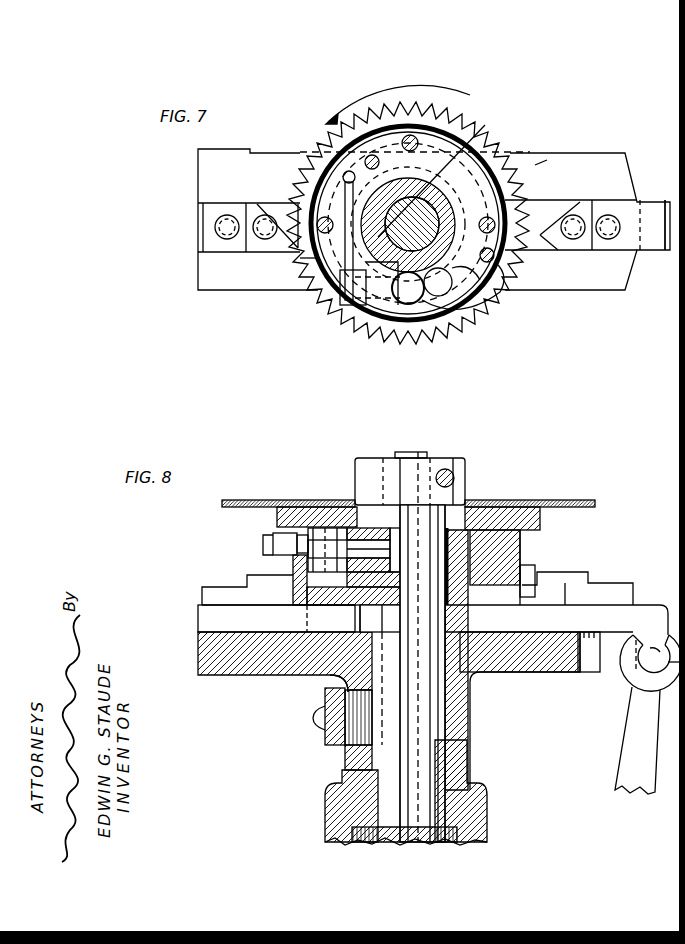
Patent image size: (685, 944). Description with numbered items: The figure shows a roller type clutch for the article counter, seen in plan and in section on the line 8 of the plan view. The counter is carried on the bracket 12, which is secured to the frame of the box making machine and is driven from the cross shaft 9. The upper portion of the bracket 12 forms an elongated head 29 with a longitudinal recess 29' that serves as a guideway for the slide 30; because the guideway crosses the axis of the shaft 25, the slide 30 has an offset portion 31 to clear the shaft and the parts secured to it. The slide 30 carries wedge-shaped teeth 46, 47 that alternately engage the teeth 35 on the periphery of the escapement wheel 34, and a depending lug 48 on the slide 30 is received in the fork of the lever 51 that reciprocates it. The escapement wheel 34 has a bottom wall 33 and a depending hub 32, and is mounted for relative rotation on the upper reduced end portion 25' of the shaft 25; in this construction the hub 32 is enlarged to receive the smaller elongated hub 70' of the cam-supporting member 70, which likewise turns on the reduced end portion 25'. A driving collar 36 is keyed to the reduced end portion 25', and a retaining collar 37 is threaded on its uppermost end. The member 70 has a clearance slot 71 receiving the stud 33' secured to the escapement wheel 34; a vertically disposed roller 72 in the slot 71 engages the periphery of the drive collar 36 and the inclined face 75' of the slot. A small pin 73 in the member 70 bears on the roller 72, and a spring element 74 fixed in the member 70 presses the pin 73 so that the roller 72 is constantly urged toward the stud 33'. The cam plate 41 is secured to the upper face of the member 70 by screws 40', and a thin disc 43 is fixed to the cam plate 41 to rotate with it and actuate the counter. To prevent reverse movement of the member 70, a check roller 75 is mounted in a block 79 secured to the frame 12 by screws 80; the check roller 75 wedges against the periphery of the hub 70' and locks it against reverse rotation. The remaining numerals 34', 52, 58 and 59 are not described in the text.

In FIG. 7, the section line 8— 8 is at (198, 252).
In FIG. 8, the cross shaft 9 is at (380, 718).
In FIG. 8, the bracket 12 is at (485, 805).
In FIG. 7, the shaft 25 is at (422, 224).
In FIG. 8, the shaft 25 is at (436, 632).
In FIG. 8, the upper reduced end portion of the shaft 25' is at (384, 766).
In FIG. 7, the head 29 is at (434, 207).
In FIG. 8, the head 29 is at (364, 662).
In FIG. 7, the recess or guideway 29' is at (418, 187).
In FIG. 7, the slide 30 is at (555, 205).
In FIG. 8, the slide 30 is at (200, 620).
In FIG. 7, the offset portion of the slide 31 is at (373, 143).
In FIG. 8, the offset portion of the slide 31 is at (468, 627).
In FIG. 8, the depending hub 32 is at (335, 675).
In FIG. 8, the bottom wall 33 is at (404, 539).
In FIG. 7, the stud 33' is at (490, 302).
In FIG. 7, the escapement wheel 34 is at (408, 208).
In FIG. 8, the escapement wheel 34 is at (571, 567).
In FIG. 7, the stop 34' is at (269, 269).
In FIG. 8, the stop 34' is at (223, 543).
In FIG. 7, the teeth 35 is at (390, 121).
In FIG. 8, the teeth 35 is at (545, 590).
In FIG. 7, the driving collar 36 is at (455, 155).
In FIG. 8, the retaining collar 37 is at (357, 468).
In FIG. 7, the screws 40' is at (465, 161).
In FIG. 7, the cam plate 41 is at (668, 200).
In FIG. 8, the cam plate 41 is at (520, 506).
In FIG. 8, the thin disc 43 is at (225, 506).
In FIG. 7, the wedge-shaped tooth 46 is at (282, 216).
In FIG. 8, the wedge-shaped tooth 46 is at (278, 615).
In FIG. 7, the wedge-shaped tooth 47 is at (552, 238).
In FIG. 8, the wedge-shaped tooth 47 is at (555, 595).
In FIG. 8, the depending lug 48 is at (655, 640).
In FIG. 8, the lever 51 is at (622, 770).
In FIG. 8, the wrench jaw 52 is at (655, 690).
In FIG. 8, the lever 58 is at (674, 466).
In FIG. 8, the lever 59 is at (676, 436).
In FIG. 7, the cam-supporting member 70 is at (492, 296).
In FIG. 8, the cam-supporting member 70 is at (524, 563).
In FIG. 8, the elongated hub 70' is at (512, 660).
In FIG. 7, the recess or clearance slot 71 is at (358, 308).
In FIG. 7, the roller 72 is at (450, 296).
In FIG. 8, the roller 72 is at (400, 540).
In FIG. 7, the pin 73 is at (352, 292).
In FIG. 8, the pin 73 is at (293, 572).
In FIG. 7, the spring element 74 is at (346, 268).
In FIG. 8, the spring element 74 is at (298, 546).
In FIG. 8, the check roller 75 is at (399, 624).
In FIG. 7, the inclined wall portion or face 75' is at (420, 326).
In FIG. 8, the block 79 is at (335, 726).
In FIG. 8, the screws 80 is at (318, 718).